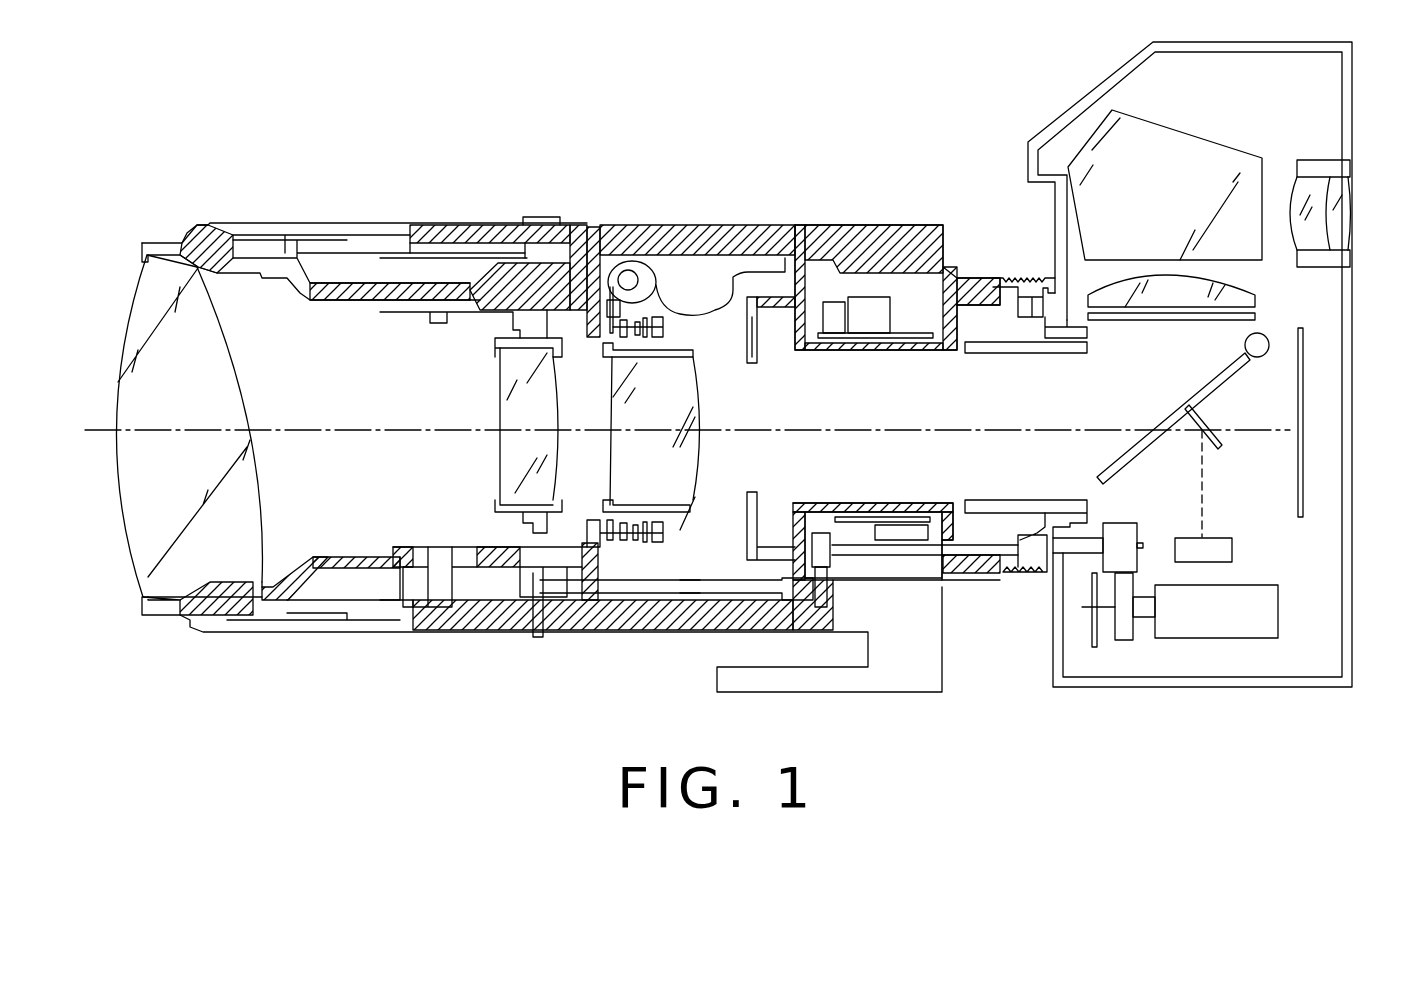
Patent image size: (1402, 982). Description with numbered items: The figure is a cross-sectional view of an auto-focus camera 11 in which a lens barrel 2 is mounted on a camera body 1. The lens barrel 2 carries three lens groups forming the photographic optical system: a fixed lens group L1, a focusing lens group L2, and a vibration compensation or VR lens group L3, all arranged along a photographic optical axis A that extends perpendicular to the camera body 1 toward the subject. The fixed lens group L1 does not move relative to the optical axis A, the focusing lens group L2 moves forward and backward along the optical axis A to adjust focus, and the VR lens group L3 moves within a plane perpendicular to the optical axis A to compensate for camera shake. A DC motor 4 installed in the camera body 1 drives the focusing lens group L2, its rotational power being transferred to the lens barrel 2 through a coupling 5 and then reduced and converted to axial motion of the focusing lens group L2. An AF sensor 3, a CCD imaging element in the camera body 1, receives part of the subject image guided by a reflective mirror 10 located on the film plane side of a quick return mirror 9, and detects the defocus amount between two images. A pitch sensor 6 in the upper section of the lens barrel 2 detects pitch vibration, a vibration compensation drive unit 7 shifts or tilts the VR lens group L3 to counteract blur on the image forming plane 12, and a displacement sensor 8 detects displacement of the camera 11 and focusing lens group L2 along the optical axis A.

The camera body 1 is at (1352, 675).
The lens barrel 2 is at (445, 632).
The AF sensor 3 is at (1232, 550).
The DC motor 4 is at (1277, 613).
The coupling 5 is at (1047, 573).
The pitch sensor 6 is at (875, 300).
The vibration compensation drive unit 7 is at (705, 270).
The displacement sensor 8 is at (910, 535).
The quick return mirror 9 is at (1227, 360).
The reflective mirror 10 is at (1222, 438).
The camera 11 is at (624, 117).
The image forming plane 12 is at (1302, 343).
The fixed lens group L1 is at (147, 573).
The focusing lens group L2 is at (503, 470).
The VR lens group L3 is at (688, 468).
The photographic optical axis A is at (98, 434).